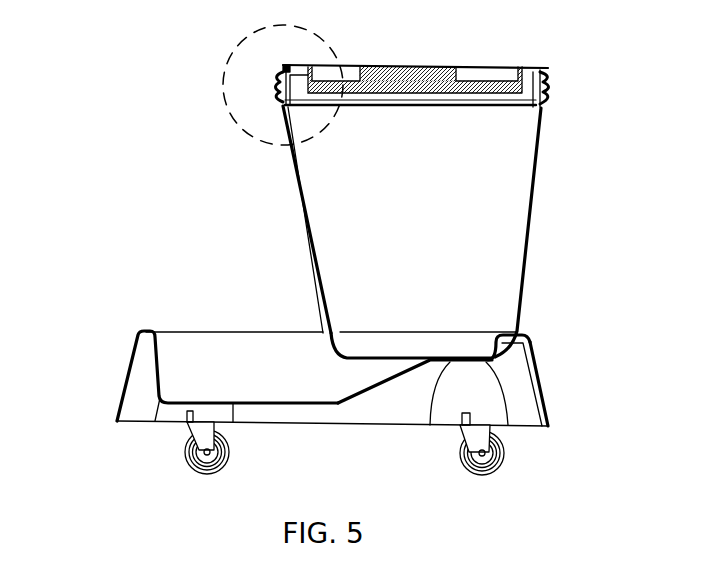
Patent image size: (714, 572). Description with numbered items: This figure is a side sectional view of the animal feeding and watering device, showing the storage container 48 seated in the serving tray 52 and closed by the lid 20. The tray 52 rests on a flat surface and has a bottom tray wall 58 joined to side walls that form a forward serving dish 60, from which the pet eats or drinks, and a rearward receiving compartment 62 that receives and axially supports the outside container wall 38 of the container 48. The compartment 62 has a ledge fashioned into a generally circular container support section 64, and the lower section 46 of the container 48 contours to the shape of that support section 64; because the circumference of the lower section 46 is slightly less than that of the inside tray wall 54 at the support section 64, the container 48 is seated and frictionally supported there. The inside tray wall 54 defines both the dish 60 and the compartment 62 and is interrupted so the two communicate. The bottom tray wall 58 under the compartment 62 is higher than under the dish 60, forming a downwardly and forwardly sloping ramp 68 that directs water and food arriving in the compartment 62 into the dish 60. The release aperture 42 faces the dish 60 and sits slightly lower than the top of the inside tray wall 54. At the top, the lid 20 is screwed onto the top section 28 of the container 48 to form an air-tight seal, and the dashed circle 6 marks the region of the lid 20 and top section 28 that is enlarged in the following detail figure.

The detail region of lid 6 is at (260, 33).
The lid 20 is at (553, 90).
The top section 28 is at (547, 104).
The outside container wall 38 is at (327, 186).
The release aperture 42 is at (325, 333).
The storage container 48 is at (412, 198).
The serving tray 52 is at (118, 356).
The inside tray wall 54 is at (158, 341).
The bottom tray wall 58 is at (172, 400).
The serving dish 60 is at (268, 382).
The ramp 68 is at (385, 382).
The lower section 46 is at (477, 344).
The container support section 64 is at (500, 357).
The rearward receiving compartment 62 is at (497, 360).